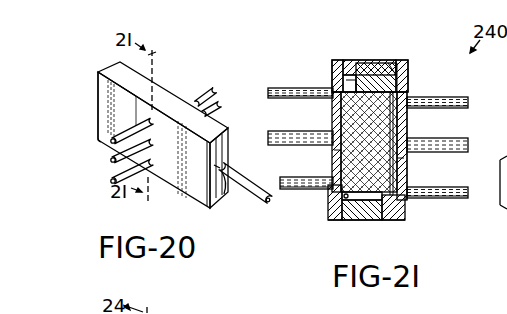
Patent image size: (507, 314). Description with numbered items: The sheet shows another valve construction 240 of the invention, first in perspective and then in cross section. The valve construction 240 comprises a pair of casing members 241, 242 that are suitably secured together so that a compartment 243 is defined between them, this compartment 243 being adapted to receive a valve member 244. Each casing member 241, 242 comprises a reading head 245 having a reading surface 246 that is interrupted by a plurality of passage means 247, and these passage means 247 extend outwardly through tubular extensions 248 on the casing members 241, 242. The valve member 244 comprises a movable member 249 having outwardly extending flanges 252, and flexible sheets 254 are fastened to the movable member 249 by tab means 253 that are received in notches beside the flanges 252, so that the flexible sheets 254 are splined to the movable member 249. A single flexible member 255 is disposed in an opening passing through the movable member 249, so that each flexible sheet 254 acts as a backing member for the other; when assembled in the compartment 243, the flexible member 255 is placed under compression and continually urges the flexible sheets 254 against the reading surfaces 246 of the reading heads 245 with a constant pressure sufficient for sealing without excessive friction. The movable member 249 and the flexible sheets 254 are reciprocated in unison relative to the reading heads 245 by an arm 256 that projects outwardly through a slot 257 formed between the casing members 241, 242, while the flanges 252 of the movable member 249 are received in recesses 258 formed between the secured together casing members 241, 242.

In FIG. 20, the valve construction 240 is at (190, 58).
In FIG. 20, the casing member 241 is at (173, 98).
In FIG. 21, the casing member 241 is at (407, 80).
In FIG. 20, the casing member 242 is at (100, 80).
In FIG. 21, the casing member 242 is at (332, 62).
In FIG. 21, the compartment 243 is at (403, 70).
In FIG. 21, the valve member 244 is at (388, 67).
In FIG. 20, the reading head 245 is at (172, 178).
In FIG. 21, the reading head 245 is at (330, 112).
In FIG. 21, the reading surface 246 is at (340, 216).
In FIG. 20, the passage means 247 is at (262, 136).
In FIG. 21, the passage means 247 is at (305, 190).
In FIG. 20, the tubular extension 248 is at (265, 182).
In FIG. 21, the tubular extension 248 is at (312, 88).
In FIG. 21, the movable member 249 is at (362, 80).
In FIG. 21, the flange 252 is at (372, 98).
In FIG. 21, the tab means 253 is at (400, 177).
In FIG. 21, the flexible sheet 254 is at (333, 155).
In FIG. 21, the flexible member 255 is at (395, 220).
In FIG. 20, the arm 256 is at (263, 206).
In FIG. 20, the slot 257 is at (220, 194).
In FIG. 21, the recess 258 is at (360, 78).